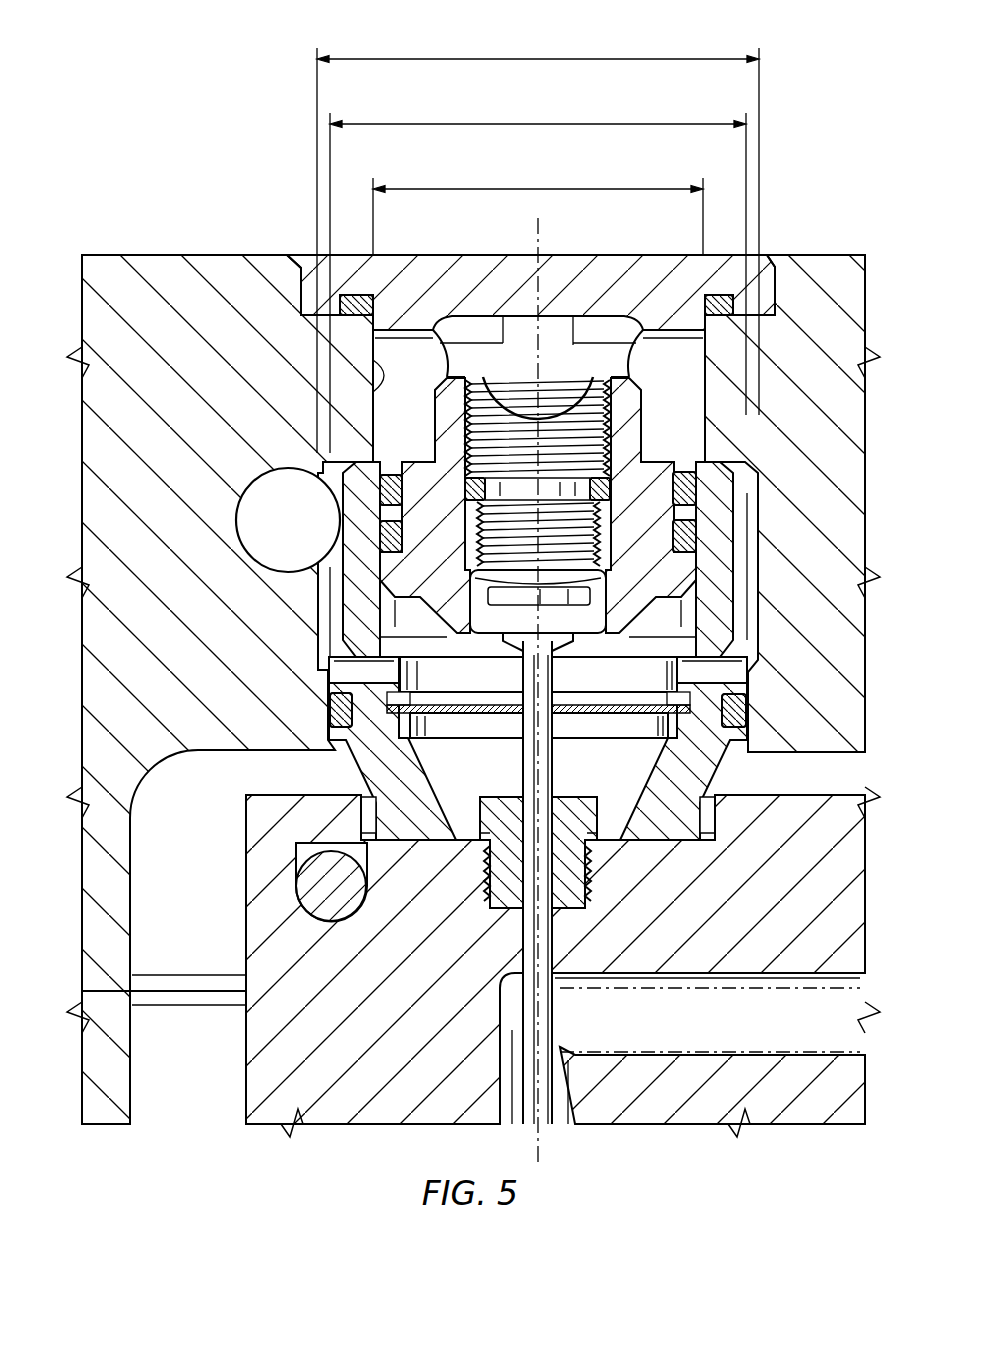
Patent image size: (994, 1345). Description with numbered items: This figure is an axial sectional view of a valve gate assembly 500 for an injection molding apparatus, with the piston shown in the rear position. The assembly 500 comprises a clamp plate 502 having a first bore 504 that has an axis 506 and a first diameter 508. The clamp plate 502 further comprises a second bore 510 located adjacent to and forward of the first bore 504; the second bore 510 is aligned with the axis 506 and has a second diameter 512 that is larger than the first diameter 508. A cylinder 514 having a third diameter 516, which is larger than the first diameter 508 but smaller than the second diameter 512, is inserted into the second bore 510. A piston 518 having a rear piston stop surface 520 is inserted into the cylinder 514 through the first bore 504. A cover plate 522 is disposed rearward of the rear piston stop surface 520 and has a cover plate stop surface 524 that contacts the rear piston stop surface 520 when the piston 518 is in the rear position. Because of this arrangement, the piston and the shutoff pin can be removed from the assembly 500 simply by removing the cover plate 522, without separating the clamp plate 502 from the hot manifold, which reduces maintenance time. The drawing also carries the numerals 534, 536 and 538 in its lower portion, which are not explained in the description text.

The valve gate assembly 500 is at (806, 243).
The clamp plate 502 is at (170, 255).
The first bore 504 is at (378, 380).
The axis 506 is at (548, 232).
The first diameter 508 is at (516, 188).
The second bore 510 is at (760, 600).
The second diameter 512 is at (425, 58).
The cylinder 514 is at (335, 557).
The third diameter 516 is at (623, 122).
The piston 518 is at (473, 637).
The rear piston stop surface 520 is at (665, 461).
The cover plate 522 is at (628, 252).
The cover plate stop surface 524 is at (407, 463).
The fluid channel 534 is at (552, 1010).
The lower block 536 is at (389, 1126).
The threaded insert 538 is at (565, 906).